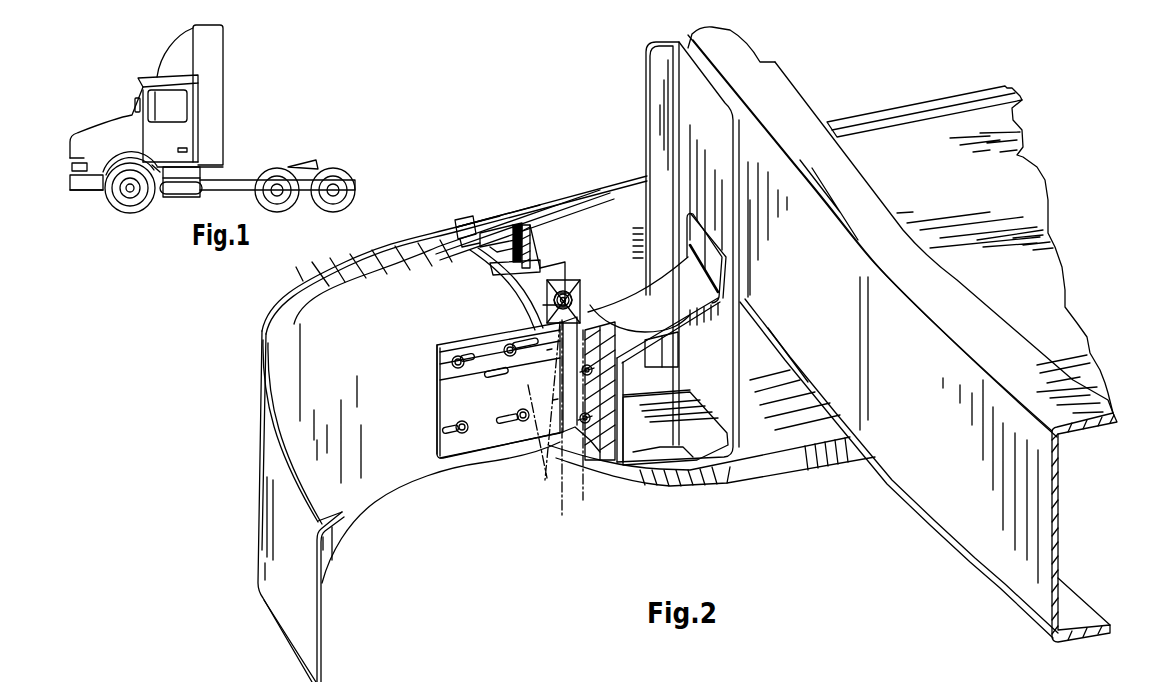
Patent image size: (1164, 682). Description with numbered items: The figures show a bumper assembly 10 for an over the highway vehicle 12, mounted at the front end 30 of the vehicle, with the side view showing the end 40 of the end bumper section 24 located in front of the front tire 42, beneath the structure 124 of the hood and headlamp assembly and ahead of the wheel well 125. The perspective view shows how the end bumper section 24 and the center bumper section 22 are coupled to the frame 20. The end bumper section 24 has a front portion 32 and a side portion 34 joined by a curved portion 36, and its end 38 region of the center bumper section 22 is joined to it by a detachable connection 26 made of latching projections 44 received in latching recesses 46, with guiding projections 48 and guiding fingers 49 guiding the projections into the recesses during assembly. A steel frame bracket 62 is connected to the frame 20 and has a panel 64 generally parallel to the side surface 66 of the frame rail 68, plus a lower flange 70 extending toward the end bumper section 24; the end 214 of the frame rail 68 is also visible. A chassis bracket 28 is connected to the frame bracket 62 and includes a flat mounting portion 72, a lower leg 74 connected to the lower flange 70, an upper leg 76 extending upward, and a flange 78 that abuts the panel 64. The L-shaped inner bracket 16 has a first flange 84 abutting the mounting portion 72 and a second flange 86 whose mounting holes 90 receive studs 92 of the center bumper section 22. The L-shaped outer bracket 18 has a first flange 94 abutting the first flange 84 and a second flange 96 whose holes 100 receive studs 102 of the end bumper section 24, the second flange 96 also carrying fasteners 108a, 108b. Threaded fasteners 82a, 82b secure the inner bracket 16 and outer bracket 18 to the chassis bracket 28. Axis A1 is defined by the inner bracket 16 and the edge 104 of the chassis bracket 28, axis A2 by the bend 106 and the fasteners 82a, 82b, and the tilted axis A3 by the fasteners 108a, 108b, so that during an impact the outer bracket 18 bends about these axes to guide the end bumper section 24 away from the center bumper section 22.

In FIG. 1, the bumper assembly 10 is at (46, 232).
In FIG. 1, the over the highway vehicle 12 is at (264, 46).
In FIG. 2, the inner bracket 16 is at (545, 235).
In FIG. 2, the outer bracket 18 is at (440, 415).
In FIG. 2, the frame 20 is at (773, 60).
In FIG. 2, the center bumper section 22 is at (867, 117).
In FIG. 1, the end bumper section 24 is at (88, 185).
In FIG. 2, the end bumper section 24 is at (252, 340).
In FIG. 2, the detachable connection 26 is at (477, 210).
In FIG. 2, the chassis bracket 28 is at (681, 475).
In FIG. 1, the front end 30 is at (72, 165).
In FIG. 2, the front portion 32 is at (367, 250).
In FIG. 2, the side portion 34 is at (286, 532).
In FIG. 2, the curved portion 36 is at (283, 303).
In FIG. 2, the end of the center bumper section 38 is at (510, 226).
In FIG. 1, the end of the end bumper section 40 is at (118, 166).
In FIG. 2, the end of the end bumper section 40 is at (325, 628).
In FIG. 1, the front tire 42 is at (140, 208).
In FIG. 2, the latching projections 44 is at (466, 222).
In FIG. 2, the latching recesses 46 is at (492, 225).
In FIG. 2, the guiding projections 48 is at (528, 225).
In FIG. 2, the guiding fingers 49 is at (478, 281).
In FIG. 2, the frame bracket 62 is at (657, 83).
In FIG. 2, the panel 64 is at (725, 155).
In FIG. 2, the side surface 66 is at (784, 292).
In FIG. 2, the frame rail 68 is at (797, 110).
In FIG. 2, the lower flange 70 is at (716, 479).
In FIG. 2, the mounting portion 72 is at (677, 393).
In FIG. 2, the lower leg 74 is at (661, 478).
In FIG. 2, the upper leg 76 is at (640, 323).
In FIG. 2, the flange 78 is at (703, 255).
In FIG. 2, the fastener 82a is at (620, 428).
In FIG. 2, the fastener 82b is at (600, 453).
In FIG. 2, the first flange 84 is at (572, 300).
In FIG. 2, the second flange 86 is at (568, 291).
In FIG. 2, the mounting holes 90 is at (574, 295).
In FIG. 2, the studs 92 is at (588, 328).
In FIG. 2, the first flange 94 is at (620, 395).
In FIG. 2, the second flange 96 is at (437, 450).
In FIG. 2, the holes 100 is at (503, 348).
In FIG. 2, the studs 102 is at (462, 434).
In FIG. 2, the edge 104 is at (660, 340).
In FIG. 2, the bend 106 is at (537, 343).
In FIG. 2, the fastener 108a is at (497, 377).
In FIG. 2, the fastener 108b is at (521, 422).
In FIG. 1, the structure 124 is at (85, 173).
In FIG. 1, the wheel well 125 is at (153, 168).
In FIG. 2, the end of the frame rail 214 is at (690, 43).
In FIG. 2, the axis A1 is at (583, 426).
In FIG. 2, the axis A2 is at (560, 429).
In FIG. 2, the axis A3 is at (543, 442).